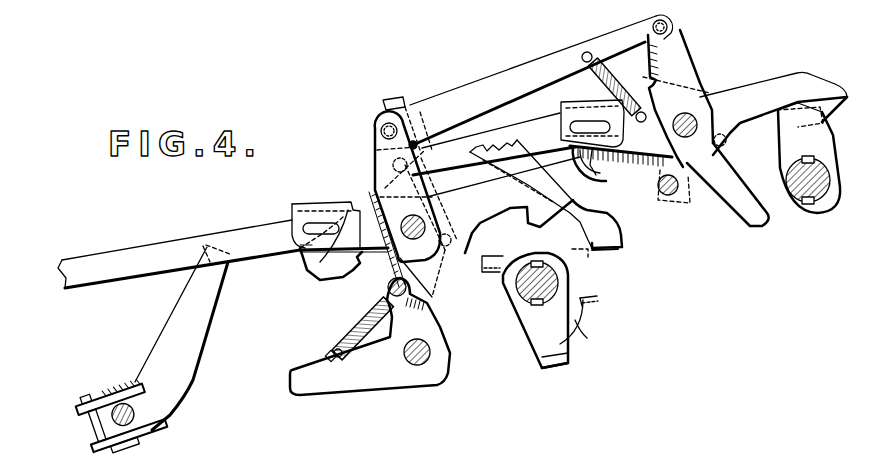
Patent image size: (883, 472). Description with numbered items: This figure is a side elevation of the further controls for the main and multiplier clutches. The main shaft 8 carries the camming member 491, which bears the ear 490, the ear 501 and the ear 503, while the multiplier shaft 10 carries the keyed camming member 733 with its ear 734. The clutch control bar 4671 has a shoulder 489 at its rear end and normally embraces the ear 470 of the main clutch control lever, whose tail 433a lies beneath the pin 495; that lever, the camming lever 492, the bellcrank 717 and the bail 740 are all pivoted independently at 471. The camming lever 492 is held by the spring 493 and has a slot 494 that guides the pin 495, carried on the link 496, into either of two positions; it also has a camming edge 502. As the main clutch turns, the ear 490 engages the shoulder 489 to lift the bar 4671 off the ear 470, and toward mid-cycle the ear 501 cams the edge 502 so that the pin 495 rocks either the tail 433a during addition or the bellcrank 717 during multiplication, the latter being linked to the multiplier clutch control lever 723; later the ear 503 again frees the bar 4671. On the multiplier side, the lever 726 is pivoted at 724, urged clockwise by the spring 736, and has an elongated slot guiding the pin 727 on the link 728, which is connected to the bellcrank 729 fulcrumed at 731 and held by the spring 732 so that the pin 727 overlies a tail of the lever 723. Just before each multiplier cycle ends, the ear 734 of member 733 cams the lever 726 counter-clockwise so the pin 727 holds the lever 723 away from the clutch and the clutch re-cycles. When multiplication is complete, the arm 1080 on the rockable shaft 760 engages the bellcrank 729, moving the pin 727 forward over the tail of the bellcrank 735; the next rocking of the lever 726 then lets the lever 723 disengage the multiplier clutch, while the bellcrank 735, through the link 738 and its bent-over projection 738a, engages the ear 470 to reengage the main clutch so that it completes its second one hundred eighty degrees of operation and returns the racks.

The main shaft 8 is at (556, 283).
The multiplier shaft 10 is at (830, 180).
The ear 470 is at (378, 140).
The pivot 471 is at (424, 223).
The shoulder 489 is at (623, 249).
The ear 490 is at (600, 303).
The camming member 491 is at (582, 335).
The camming lever 492 is at (478, 225).
The spring 493 is at (436, 294).
The slot 494 is at (318, 228).
The pin 495 is at (297, 254).
The link 496 is at (272, 216).
The ear 501 is at (558, 367).
The camming edge 502 is at (539, 228).
The ear 503 is at (486, 274).
The bellcrank 717 is at (308, 257).
The multiplier clutch control lever 723 is at (598, 178).
The pivot 724 is at (695, 123).
The lever 726 is at (796, 83).
The pin 727 is at (560, 133).
The link 728 is at (509, 135).
The bellcrank 729 is at (395, 387).
The fulcrum 731 is at (430, 360).
The spring 732 is at (350, 341).
The camming member 733 is at (818, 150).
The ear 734 is at (815, 122).
The bellcrank 735 is at (689, 59).
The spring 736 is at (686, 195).
The link 738 is at (529, 66).
The bent-over projection 738a is at (418, 100).
The bail 740 is at (376, 166).
The rockable shaft 760 is at (143, 427).
The arm 1080 is at (194, 353).
The tail 433a is at (318, 270).
The clutch control bar 4671 is at (617, 224).